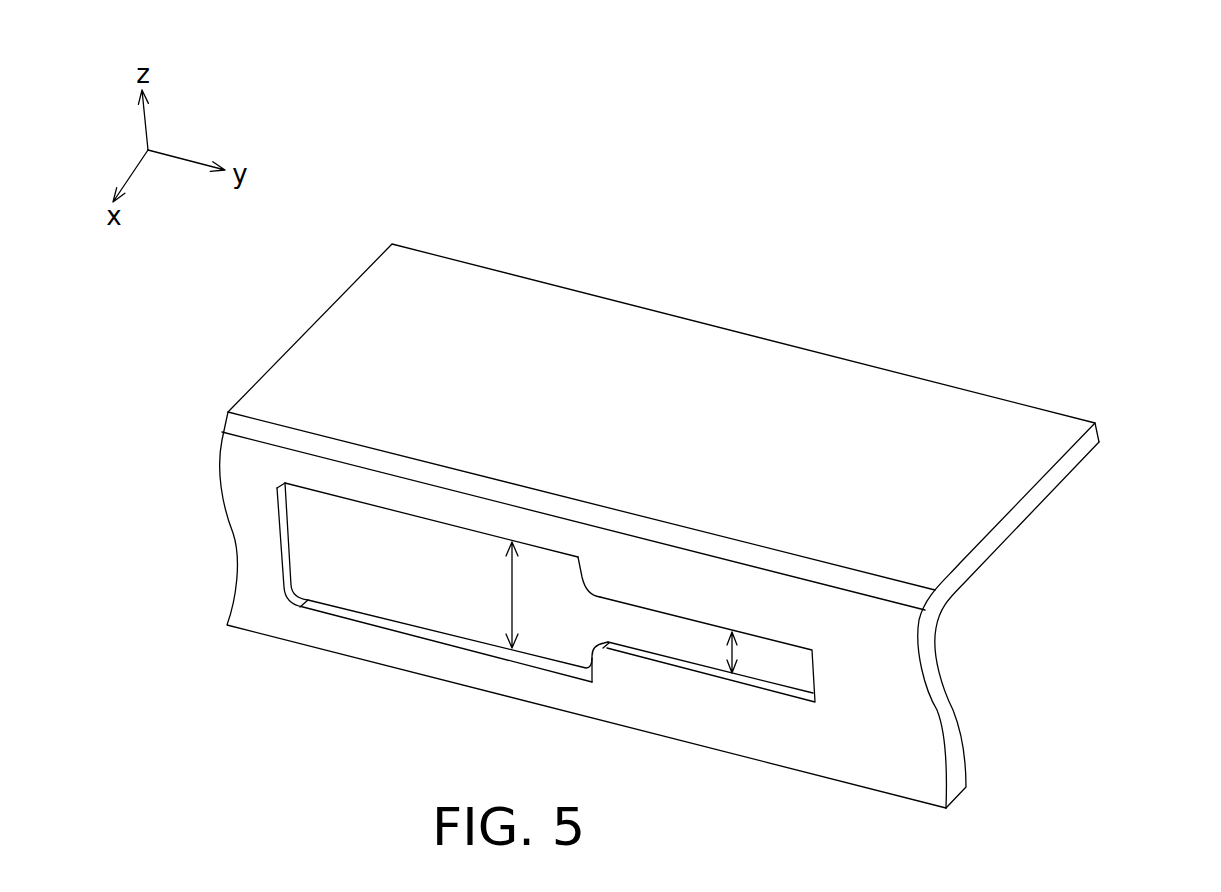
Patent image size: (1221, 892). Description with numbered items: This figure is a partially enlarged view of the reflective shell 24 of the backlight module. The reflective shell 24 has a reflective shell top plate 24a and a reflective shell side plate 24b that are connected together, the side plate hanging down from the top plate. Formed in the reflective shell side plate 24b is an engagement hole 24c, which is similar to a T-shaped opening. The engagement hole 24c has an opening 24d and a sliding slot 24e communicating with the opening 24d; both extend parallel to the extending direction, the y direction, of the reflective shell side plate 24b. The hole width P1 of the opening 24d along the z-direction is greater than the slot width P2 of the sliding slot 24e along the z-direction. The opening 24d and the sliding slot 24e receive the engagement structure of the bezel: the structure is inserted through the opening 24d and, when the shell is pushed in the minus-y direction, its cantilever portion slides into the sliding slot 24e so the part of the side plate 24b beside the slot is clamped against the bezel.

The reflective shell 24 is at (1174, 328).
The reflective shell top plate 24a is at (845, 385).
The reflective shell side plate 24b is at (897, 728).
The engagement hole 24c is at (494, 517).
The opening 24d is at (399, 549).
The sliding slot 24e is at (666, 631).
The hole width P1 is at (528, 595).
The slot width P2 is at (751, 656).